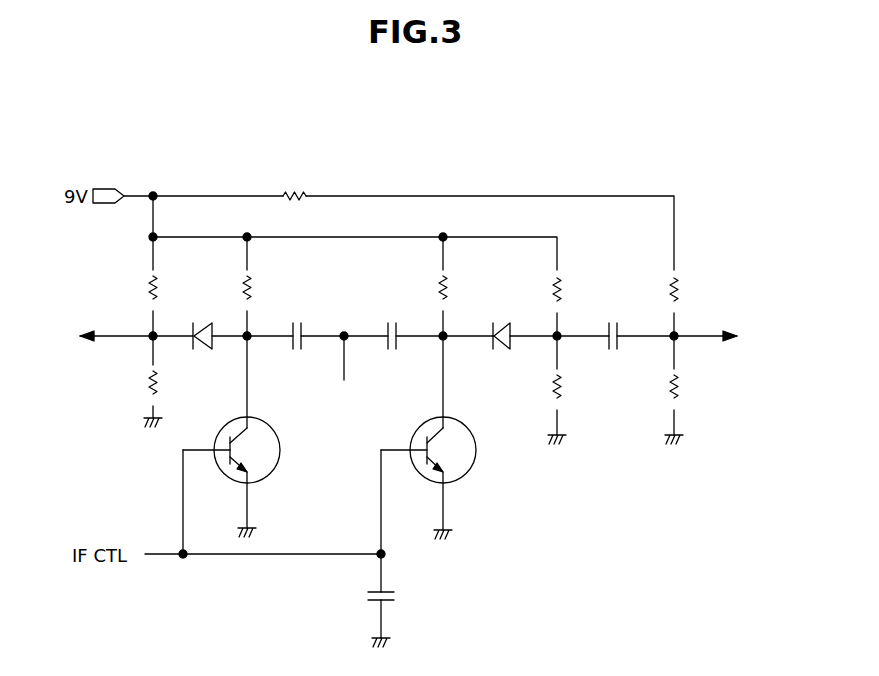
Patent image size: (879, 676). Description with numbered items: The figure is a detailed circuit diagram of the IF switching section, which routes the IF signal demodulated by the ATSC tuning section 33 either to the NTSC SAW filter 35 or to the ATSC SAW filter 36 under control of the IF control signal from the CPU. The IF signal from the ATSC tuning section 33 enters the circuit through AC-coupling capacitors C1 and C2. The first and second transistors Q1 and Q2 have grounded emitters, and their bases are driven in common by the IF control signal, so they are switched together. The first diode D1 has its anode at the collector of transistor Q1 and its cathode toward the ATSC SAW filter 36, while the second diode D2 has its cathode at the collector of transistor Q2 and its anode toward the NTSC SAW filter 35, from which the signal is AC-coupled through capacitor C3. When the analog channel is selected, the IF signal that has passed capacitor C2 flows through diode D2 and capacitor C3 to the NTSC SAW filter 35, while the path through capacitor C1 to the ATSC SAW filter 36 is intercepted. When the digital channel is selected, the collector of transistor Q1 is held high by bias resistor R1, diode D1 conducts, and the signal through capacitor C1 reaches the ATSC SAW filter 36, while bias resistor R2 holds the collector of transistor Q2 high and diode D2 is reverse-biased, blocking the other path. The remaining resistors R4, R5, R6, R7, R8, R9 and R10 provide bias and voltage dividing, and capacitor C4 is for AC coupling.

The ATSC tuning section 33 is at (339, 386).
The NTSC SAW filter 35 is at (769, 337).
The ATSC SAW filter 36 is at (53, 330).
The bias resistor R1 is at (260, 288).
The bias resistor R2 is at (456, 288).
The resistor R4 is at (166, 288).
The resistor R5 is at (166, 383).
The resistor R6 is at (294, 183).
The resistor R7 is at (570, 290).
The resistor R8 is at (570, 387).
The resistor R9 is at (687, 290).
The resistor R10 is at (693, 387).
The capacitor C1 is at (297, 325).
The capacitor C2 is at (392, 325).
The capacitor C3 is at (613, 325).
The capacitor C4 is at (395, 597).
The first diode D1 is at (203, 325).
The second diode D2 is at (502, 325).
The first transistor Q1 is at (247, 472).
The second transistor Q2 is at (443, 473).